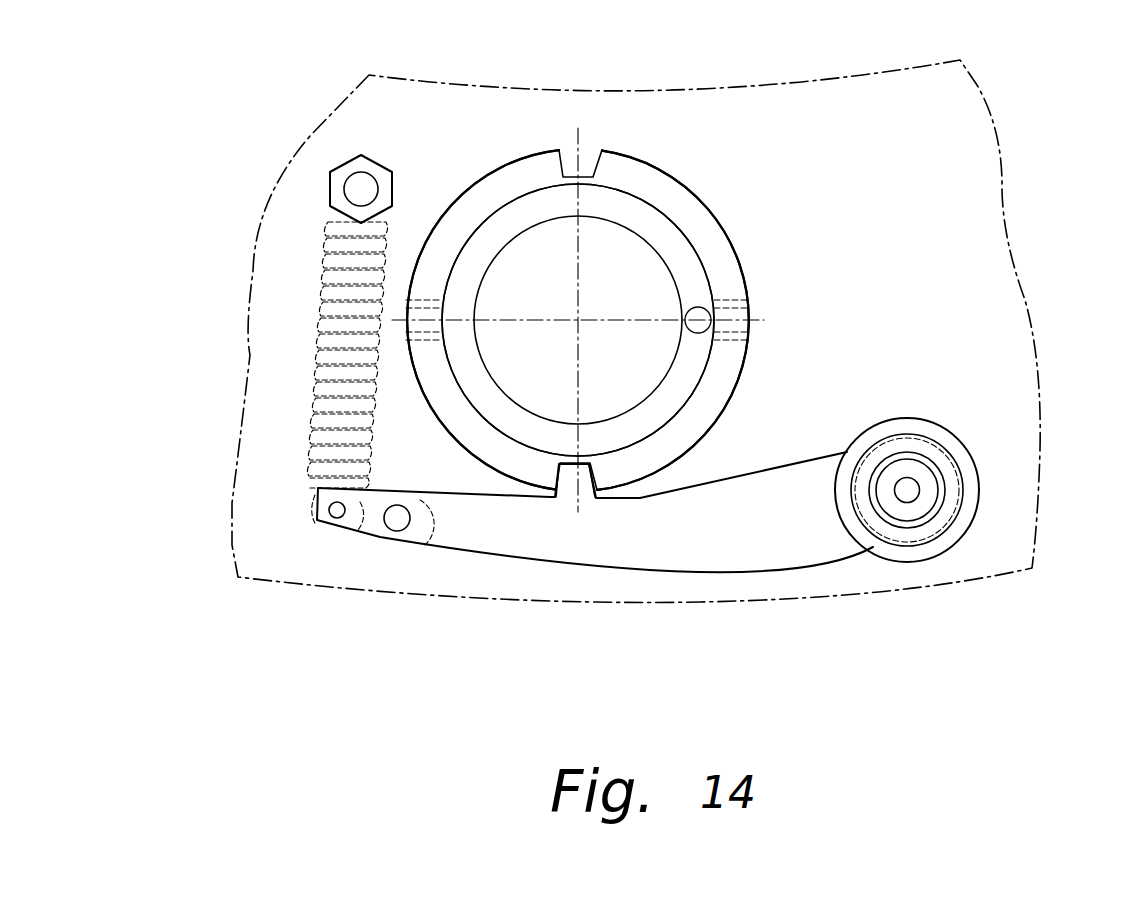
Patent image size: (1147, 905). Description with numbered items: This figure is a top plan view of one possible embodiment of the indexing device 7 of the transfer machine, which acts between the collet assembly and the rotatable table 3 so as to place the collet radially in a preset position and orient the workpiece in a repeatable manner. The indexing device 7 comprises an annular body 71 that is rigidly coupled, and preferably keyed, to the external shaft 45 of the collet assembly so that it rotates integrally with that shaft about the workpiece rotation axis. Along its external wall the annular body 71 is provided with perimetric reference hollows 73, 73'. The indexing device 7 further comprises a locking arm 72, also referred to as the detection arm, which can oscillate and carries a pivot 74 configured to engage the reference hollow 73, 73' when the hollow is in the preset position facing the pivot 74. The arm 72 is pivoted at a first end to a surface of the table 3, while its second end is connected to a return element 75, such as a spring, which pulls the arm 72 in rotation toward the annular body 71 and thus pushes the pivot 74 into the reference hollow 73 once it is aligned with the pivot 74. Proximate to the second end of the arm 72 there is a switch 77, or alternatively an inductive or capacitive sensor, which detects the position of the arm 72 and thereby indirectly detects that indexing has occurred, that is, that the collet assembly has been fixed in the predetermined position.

The table 3 is at (980, 327).
The indexing device 7 is at (738, 210).
The external shaft 45 is at (650, 230).
The annular body 71 is at (728, 260).
The locking arm 72 is at (492, 535).
The reference hollow 73 is at (552, 421).
The reference hollow 73' is at (575, 99).
The pivot 74 is at (583, 478).
The return element 75 is at (302, 316).
The switch 77 is at (397, 518).